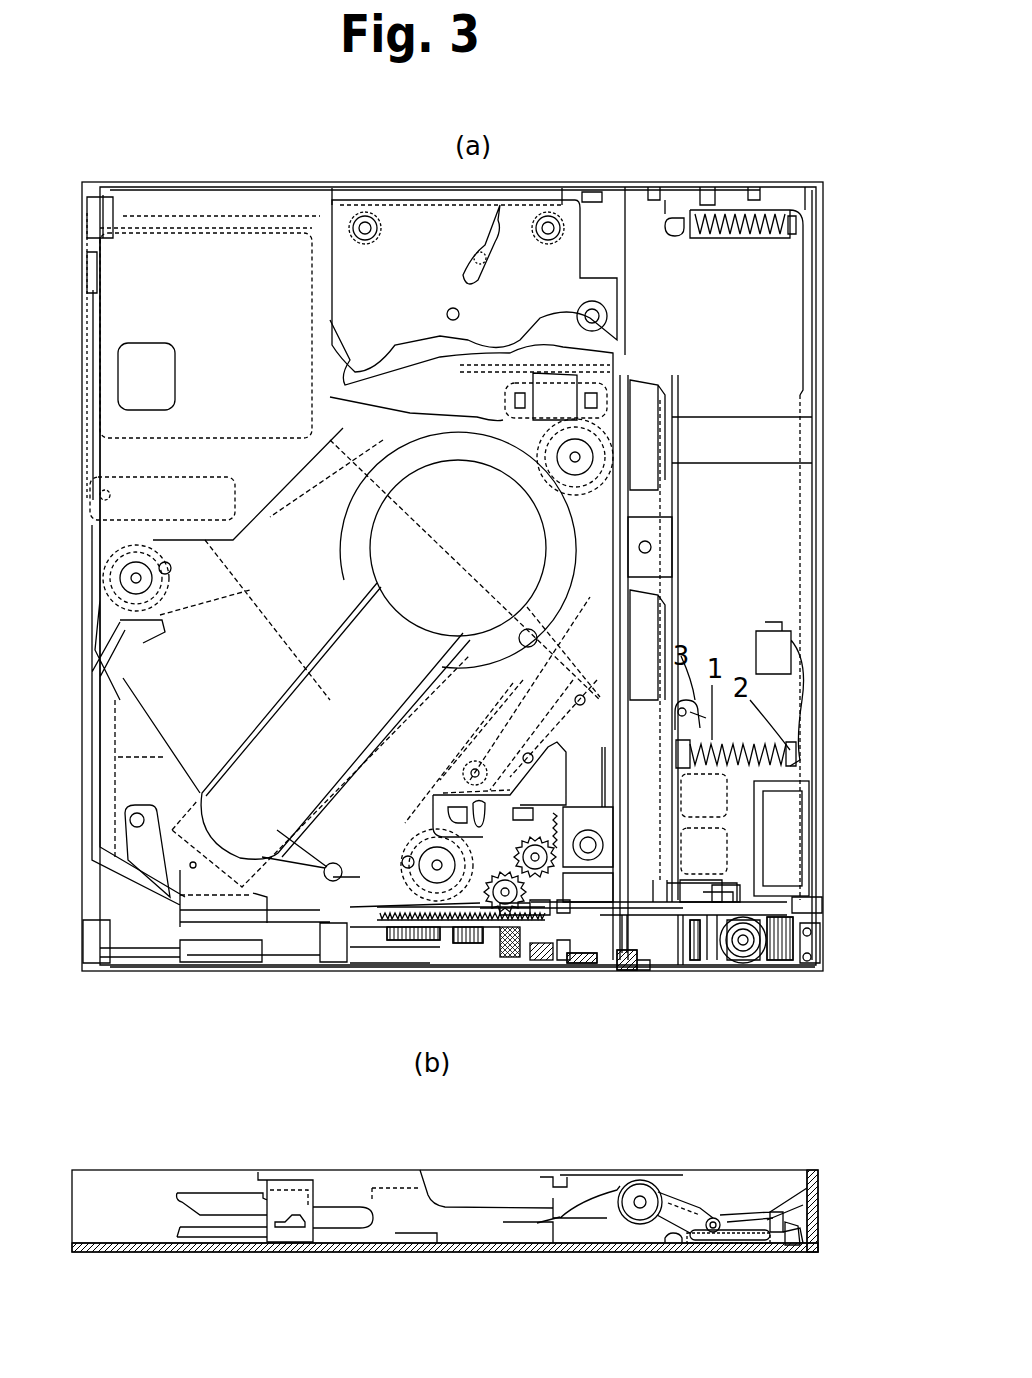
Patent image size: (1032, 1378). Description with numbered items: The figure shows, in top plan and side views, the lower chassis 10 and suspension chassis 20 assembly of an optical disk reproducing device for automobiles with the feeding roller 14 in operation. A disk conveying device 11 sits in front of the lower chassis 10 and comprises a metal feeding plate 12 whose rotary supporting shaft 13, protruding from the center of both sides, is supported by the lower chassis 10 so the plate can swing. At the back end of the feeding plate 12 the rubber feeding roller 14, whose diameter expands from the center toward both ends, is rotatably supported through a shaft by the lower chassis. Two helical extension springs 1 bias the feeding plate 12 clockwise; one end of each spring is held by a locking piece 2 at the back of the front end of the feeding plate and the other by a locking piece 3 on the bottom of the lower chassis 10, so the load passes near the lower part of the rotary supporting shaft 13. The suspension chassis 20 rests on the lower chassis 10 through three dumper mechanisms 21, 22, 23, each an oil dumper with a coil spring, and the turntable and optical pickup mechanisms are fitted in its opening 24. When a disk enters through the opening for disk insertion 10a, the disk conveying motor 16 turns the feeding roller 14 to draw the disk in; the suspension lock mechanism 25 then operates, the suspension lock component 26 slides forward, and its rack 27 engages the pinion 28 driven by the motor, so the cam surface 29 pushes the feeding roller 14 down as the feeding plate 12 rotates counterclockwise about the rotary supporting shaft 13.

In FIG. 3A, the helical extension spring 1 is at (734, 240).
In FIG. 3B, the helical extension spring 1 is at (700, 1253).
In FIG. 3A, the locking piece 2 is at (792, 240).
In FIG. 3B, the locking piece 2 is at (790, 1247).
In FIG. 3A, the locking piece 3 is at (676, 240).
In FIG. 3B, the locking piece 3 is at (670, 1243).
In FIG. 3A, the lower chassis 10 is at (140, 935).
In FIG. 3B, the lower chassis 10 is at (113, 1170).
In FIG. 3B, the opening for disk insertion 10a is at (818, 1178).
In FIG. 3A, the disk conveying device 11 is at (745, 900).
In FIG. 3B, the disk conveying device 11 is at (773, 1200).
In FIG. 3A, the feeding plate 12 is at (680, 875).
In FIG. 3B, the feeding plate 12 is at (787, 1196).
In FIG. 3A, the rotary supporting shaft 13 is at (722, 892).
In FIG. 3B, the rotary supporting shaft 13 is at (713, 1218).
In FIG. 3A, the feeding roller 14 is at (638, 865).
In FIG. 3B, the feeding roller 14 is at (640, 1190).
In FIG. 3A, the disk conveying motor 16 is at (792, 845).
In FIG. 3A, the suspension chassis 20 is at (180, 870).
In FIG. 3A, the dumper mechanism 21 is at (148, 582).
In FIG. 3A, the dumper mechanism 22 is at (572, 462).
In FIG. 3A, the dumper mechanism 23 is at (437, 865).
In FIG. 3A, the opening 24 is at (446, 583).
In FIG. 3A, the suspension lock mechanism 25 is at (278, 948).
In FIG. 3A, the suspension lock component 26 is at (355, 912).
In FIG. 3B, the suspension lock component 26 is at (327, 1183).
In FIG. 3A, the rack 27 is at (420, 920).
In FIG. 3A, the pinion 28 is at (470, 935).
In FIG. 3B, the cam surface 29 is at (537, 1223).